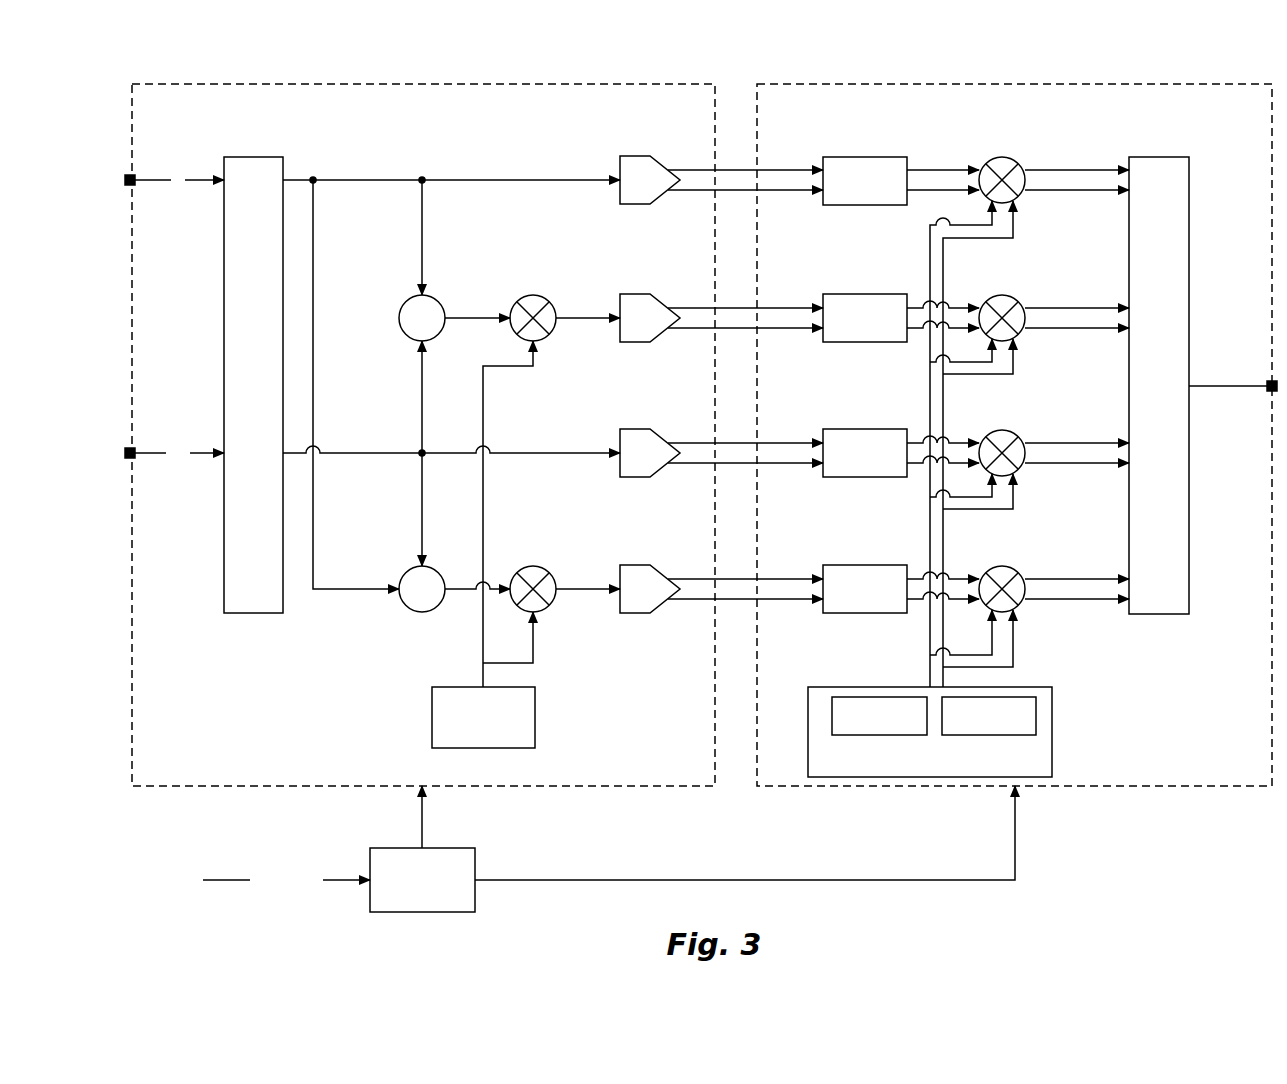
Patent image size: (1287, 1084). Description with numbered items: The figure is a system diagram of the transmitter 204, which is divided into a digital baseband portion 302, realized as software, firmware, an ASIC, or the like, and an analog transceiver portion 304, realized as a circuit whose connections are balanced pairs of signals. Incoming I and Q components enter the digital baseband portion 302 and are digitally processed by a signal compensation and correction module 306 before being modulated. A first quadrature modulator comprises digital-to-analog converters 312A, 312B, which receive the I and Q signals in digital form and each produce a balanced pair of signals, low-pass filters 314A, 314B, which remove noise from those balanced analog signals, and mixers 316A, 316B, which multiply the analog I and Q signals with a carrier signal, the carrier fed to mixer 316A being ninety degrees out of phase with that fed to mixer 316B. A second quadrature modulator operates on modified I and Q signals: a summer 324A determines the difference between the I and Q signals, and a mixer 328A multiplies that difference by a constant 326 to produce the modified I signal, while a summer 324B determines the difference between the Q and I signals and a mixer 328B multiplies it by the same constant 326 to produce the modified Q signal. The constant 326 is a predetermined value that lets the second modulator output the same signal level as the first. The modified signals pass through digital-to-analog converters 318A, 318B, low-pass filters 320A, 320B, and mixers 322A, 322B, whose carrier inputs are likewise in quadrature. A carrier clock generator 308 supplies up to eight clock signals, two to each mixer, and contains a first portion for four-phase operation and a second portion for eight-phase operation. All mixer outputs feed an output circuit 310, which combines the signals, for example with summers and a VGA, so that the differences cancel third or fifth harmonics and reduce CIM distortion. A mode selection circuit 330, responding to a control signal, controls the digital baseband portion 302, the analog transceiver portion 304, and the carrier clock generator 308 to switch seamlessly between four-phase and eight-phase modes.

The transmitter 204 is at (181, 61).
The digital baseband portion 302 is at (172, 788).
The analog transceiver portion 304 is at (795, 790).
The signal compensation and correction module 306 is at (222, 338).
The carrier clock generator 308 is at (1055, 722).
The output circuit 310 is at (1190, 500).
The digital-to-analog converter 312A is at (638, 157).
The digital-to-analog converter 312B is at (638, 429).
The low-pass filter 314A is at (862, 157).
The low-pass filter 314B is at (862, 429).
The mixer 316A is at (1015, 157).
The mixer 316B is at (1015, 430).
The digital-to-analog converter 318A is at (638, 293).
The digital-to-analog converter 318B is at (638, 565).
The low-pass filter 320A is at (862, 293).
The low-pass filter 320B is at (862, 565).
The mixer 322A is at (1015, 295).
The mixer 322B is at (1015, 566).
The summer 324A is at (397, 316).
The summer 324B is at (427, 614).
The constant 326 is at (430, 722).
The mixer 328A is at (535, 293).
The mixer 328B is at (535, 565).
The mode selection circuit 330 is at (468, 846).